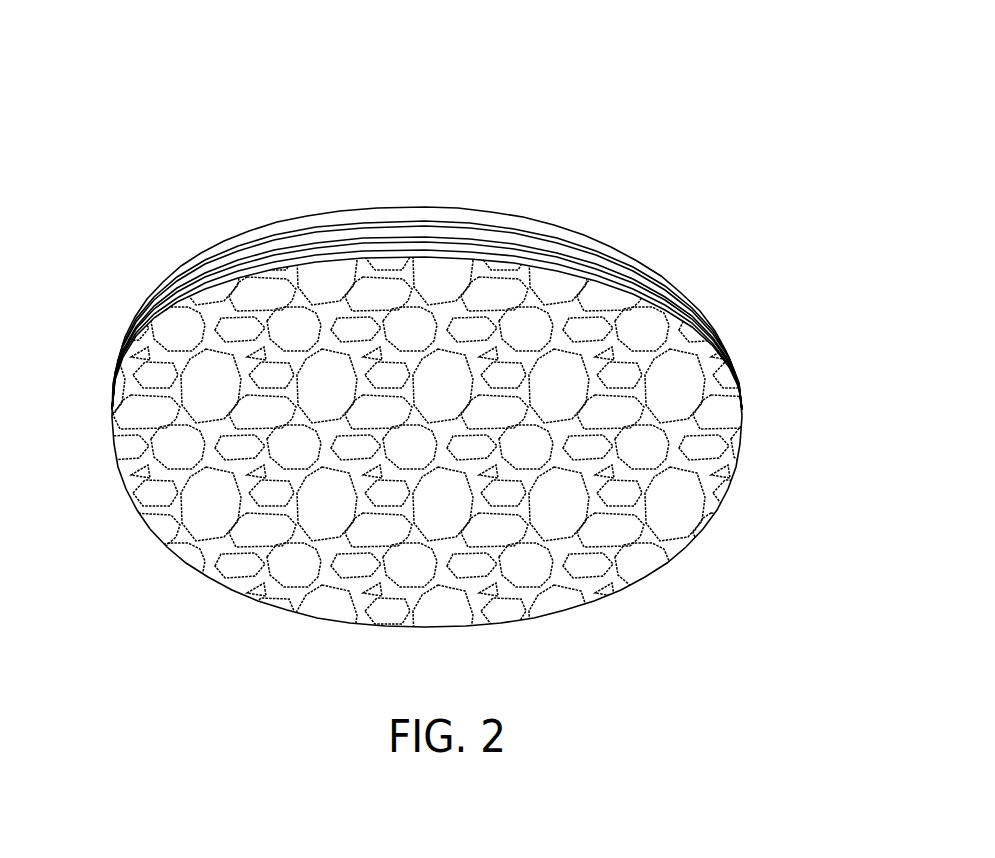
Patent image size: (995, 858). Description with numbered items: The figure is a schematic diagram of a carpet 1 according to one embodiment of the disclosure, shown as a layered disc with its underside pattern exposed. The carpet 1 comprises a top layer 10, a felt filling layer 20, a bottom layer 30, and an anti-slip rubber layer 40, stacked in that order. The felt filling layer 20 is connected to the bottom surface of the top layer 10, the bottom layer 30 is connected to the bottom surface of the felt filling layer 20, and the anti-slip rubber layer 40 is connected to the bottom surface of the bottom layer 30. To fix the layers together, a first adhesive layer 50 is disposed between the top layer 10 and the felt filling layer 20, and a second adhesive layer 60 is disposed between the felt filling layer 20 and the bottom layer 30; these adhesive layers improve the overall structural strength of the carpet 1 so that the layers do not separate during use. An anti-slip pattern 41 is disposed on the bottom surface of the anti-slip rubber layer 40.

The carpet 1 is at (456, 48).
The top layer 10 is at (452, 157).
The felt filling layer 20 is at (113, 379).
The bottom layer 30 is at (409, 300).
The anti-slip rubber layer 40 is at (422, 442).
The anti-slip pattern 41 is at (386, 474).
The first adhesive layer 50 is at (253, 189).
The second adhesive layer 60 is at (740, 388).